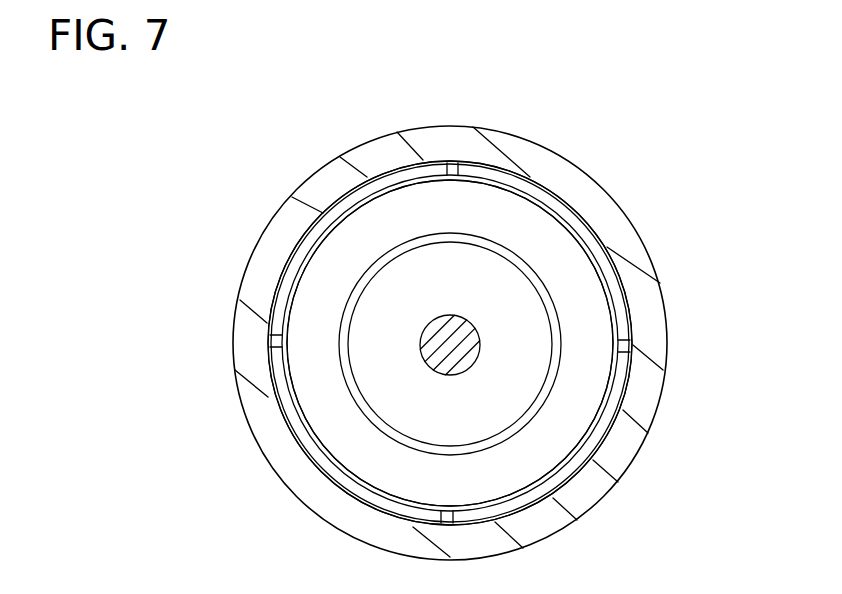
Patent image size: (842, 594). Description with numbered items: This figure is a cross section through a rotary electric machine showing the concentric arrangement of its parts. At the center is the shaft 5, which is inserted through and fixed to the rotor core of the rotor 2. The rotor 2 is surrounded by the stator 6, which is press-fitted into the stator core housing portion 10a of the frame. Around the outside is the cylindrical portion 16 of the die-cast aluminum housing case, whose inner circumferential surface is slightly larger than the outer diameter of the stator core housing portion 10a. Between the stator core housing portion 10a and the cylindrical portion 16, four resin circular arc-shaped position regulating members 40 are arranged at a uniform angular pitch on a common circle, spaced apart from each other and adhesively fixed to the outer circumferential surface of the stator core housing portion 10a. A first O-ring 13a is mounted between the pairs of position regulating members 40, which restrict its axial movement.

The rotor 2 is at (543, 374).
The shaft 5 is at (433, 355).
The stator 6 is at (310, 285).
The stator core housing portion 10a is at (285, 388).
The first O-ring 13a is at (605, 258).
The cylindrical portion 16 is at (255, 290).
The position regulating member 40 is at (630, 344).